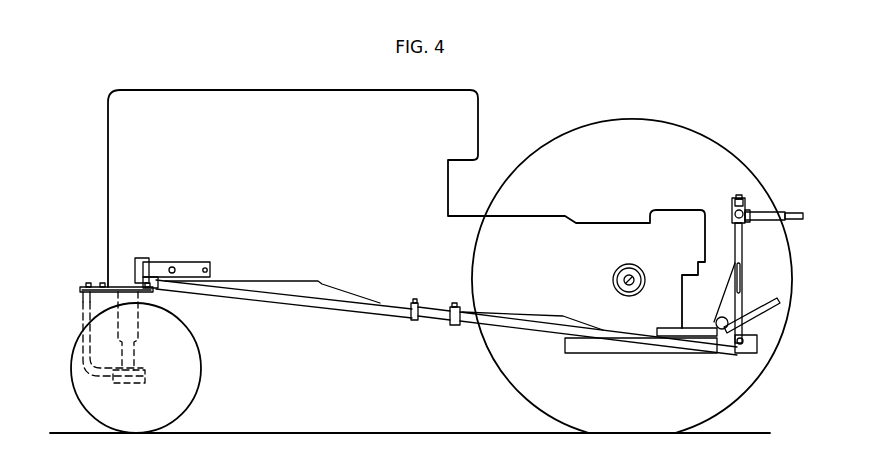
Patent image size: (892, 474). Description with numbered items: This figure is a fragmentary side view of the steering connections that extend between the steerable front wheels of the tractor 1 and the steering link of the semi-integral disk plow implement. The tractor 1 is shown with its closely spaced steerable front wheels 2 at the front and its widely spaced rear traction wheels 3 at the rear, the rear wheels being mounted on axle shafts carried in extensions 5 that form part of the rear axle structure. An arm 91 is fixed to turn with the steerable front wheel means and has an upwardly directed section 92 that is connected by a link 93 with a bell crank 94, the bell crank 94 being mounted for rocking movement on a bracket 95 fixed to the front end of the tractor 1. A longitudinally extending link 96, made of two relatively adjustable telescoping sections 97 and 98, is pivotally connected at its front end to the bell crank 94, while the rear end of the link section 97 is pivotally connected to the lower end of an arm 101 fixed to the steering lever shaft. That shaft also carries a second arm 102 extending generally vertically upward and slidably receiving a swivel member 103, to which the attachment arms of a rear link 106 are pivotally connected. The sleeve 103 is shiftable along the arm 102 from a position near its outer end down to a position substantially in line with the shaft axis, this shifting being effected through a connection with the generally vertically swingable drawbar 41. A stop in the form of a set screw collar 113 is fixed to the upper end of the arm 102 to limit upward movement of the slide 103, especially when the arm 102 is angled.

The tractor 1 is at (250, 86).
The steerable front wheels 2 is at (80, 390).
The rear traction wheels 3 is at (657, 128).
The extensions 5 is at (48, 253).
The drawbar 41 is at (773, 307).
The arm 91 is at (104, 388).
The upwardly directed section 92 is at (88, 308).
The link 93 is at (92, 287).
The bell crank 94 is at (120, 283).
The bracket 95 is at (152, 264).
The longitudinally extending link 96 is at (377, 322).
The link section 97 is at (514, 326).
The link section 98 is at (308, 300).
The arm 101 is at (741, 301).
The second arm 102 is at (735, 233).
The swivel member 103 is at (733, 209).
The rear link 106 is at (778, 206).
The set screw collar 113 is at (739, 196).